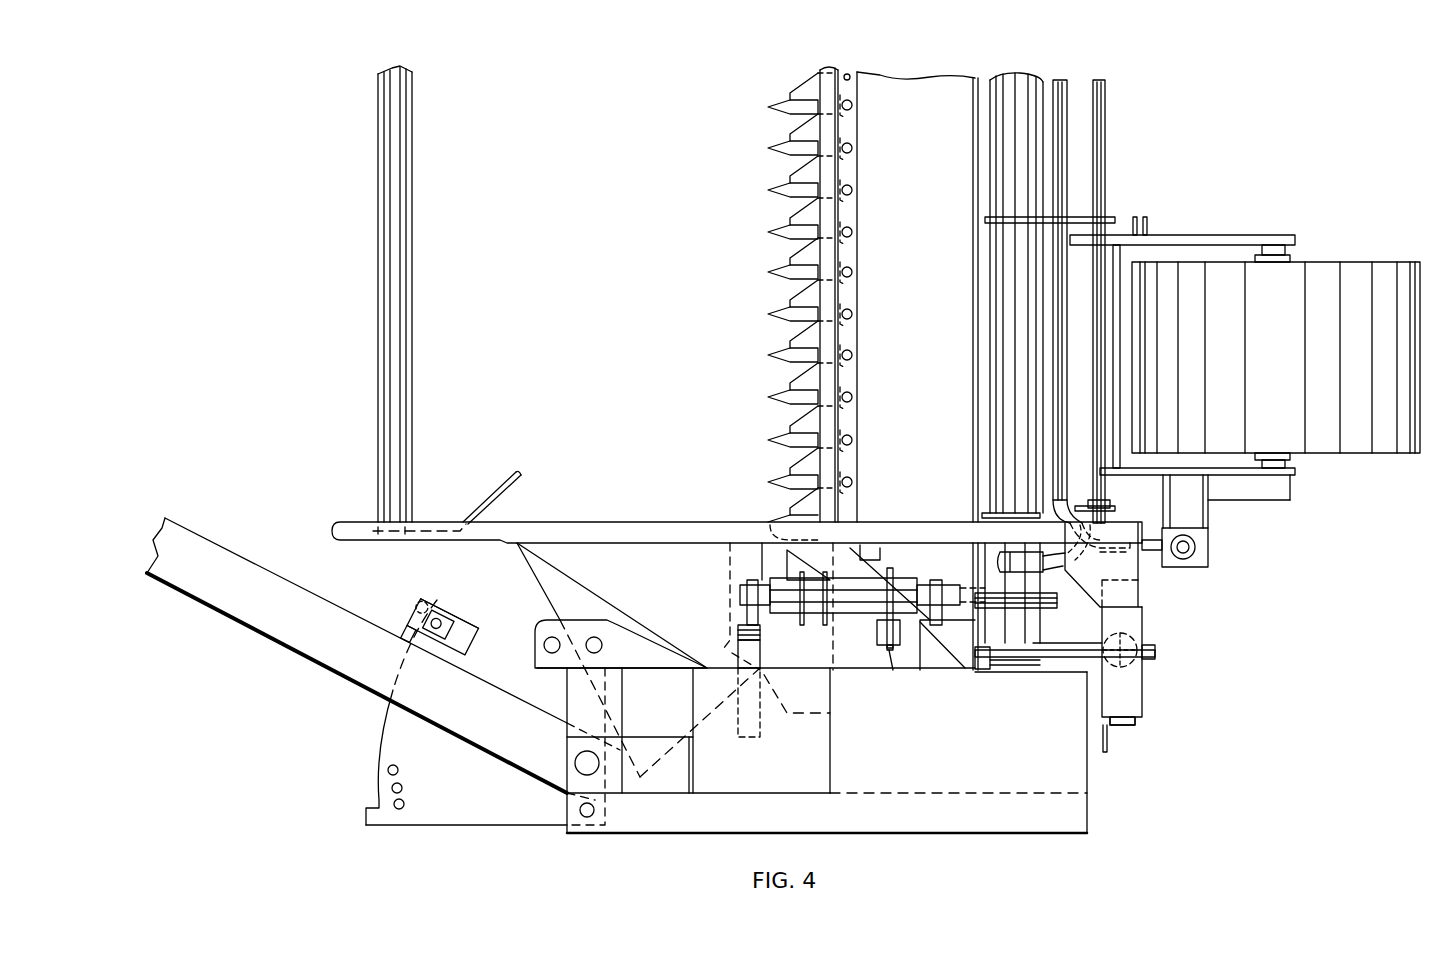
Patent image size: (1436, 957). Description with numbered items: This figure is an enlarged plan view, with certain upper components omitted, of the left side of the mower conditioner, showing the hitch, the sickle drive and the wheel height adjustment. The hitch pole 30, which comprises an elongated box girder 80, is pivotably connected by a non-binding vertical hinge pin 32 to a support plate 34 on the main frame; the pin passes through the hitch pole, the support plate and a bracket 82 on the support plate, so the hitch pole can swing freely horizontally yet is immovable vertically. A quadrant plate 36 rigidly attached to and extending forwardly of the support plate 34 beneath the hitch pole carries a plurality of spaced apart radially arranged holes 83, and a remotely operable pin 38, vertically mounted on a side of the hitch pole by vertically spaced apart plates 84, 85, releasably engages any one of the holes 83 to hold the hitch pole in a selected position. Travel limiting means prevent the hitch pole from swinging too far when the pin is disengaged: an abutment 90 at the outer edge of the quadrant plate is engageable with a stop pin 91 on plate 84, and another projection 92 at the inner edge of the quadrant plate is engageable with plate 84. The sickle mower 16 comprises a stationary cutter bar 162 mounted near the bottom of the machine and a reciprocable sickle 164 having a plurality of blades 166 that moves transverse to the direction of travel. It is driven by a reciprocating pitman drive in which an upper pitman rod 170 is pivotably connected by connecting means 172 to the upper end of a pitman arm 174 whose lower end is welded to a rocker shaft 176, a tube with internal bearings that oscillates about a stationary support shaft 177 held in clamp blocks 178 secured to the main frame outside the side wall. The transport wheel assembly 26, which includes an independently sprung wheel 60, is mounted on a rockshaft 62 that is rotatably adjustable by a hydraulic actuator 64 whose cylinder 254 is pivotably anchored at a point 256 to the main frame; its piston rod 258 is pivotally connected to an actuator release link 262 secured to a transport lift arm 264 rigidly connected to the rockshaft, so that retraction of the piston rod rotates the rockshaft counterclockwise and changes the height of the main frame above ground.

The sickle mower 16 is at (759, 306).
The stationary cutter bar 162 is at (857, 378).
The reciprocable sickle 164 is at (800, 460).
The blades 166 is at (797, 401).
The rockshaft 62 is at (990, 445).
The wheel 60 is at (1325, 447).
The transport wheel assembly 26 is at (1315, 533).
The hitch pole 30 is at (298, 645).
The quadrant plate 36 is at (385, 733).
The abutment 90 is at (366, 810).
The holes 83 is at (398, 772).
The stop pin 91 is at (415, 610).
The remotely operable pin 38 is at (443, 624).
The projection 92 is at (462, 626).
The plate 84 is at (470, 650).
The upper plate 85 is at (438, 650).
The elongated box girder 80 is at (649, 660).
The vertical hinge pin 32 is at (575, 762).
The bracket 82 is at (672, 790).
The support plate 34 is at (645, 834).
The clamp blocks 178 is at (745, 608).
The rocker shaft 176 is at (870, 607).
The stationary support shaft 177 is at (940, 600).
The pitman arm 174 is at (893, 575).
The connecting means 172 is at (878, 637).
The upper pitman rod 170 is at (889, 655).
The actuator release link 262 is at (1073, 645).
The piston rod 258 is at (1120, 640).
The cylinder 254 is at (1125, 665).
The anchor point 256 is at (1145, 600).
The hydraulic actuator 64 is at (1152, 628).
The transport lift arm 264 is at (1152, 655).